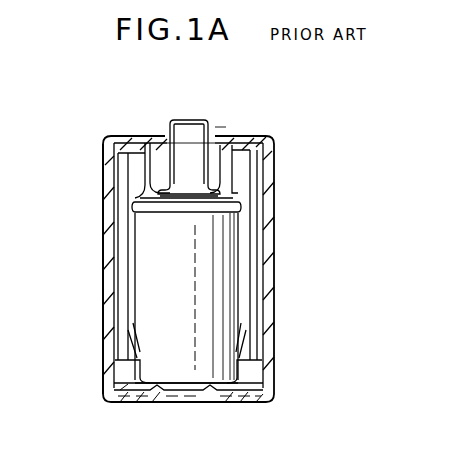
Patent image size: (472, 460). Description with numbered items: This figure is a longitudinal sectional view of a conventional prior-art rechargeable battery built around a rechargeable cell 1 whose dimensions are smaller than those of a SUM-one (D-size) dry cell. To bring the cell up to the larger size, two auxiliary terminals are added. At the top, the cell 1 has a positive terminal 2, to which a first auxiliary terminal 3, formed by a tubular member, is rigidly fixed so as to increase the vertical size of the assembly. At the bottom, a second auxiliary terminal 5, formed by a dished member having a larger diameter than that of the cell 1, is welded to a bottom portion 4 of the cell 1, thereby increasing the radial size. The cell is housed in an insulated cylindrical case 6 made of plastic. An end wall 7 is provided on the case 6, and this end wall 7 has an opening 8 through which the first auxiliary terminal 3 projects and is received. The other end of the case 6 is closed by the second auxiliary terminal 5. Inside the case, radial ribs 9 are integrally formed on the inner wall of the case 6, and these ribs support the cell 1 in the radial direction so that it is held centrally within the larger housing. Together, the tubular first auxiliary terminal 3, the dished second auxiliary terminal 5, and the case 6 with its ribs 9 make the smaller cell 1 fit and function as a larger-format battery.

The rechargeable cell 1 is at (226, 256).
The positive terminal 2 is at (238, 193).
The first auxiliary terminal 3 is at (197, 123).
The bottom portion 4 is at (259, 403).
The second auxiliary terminal 5 is at (137, 404).
The insulated cylindrical case 6 is at (103, 224).
The end wall 7 is at (139, 146).
The opening 8 is at (216, 128).
The radial ribs 9 is at (273, 303).